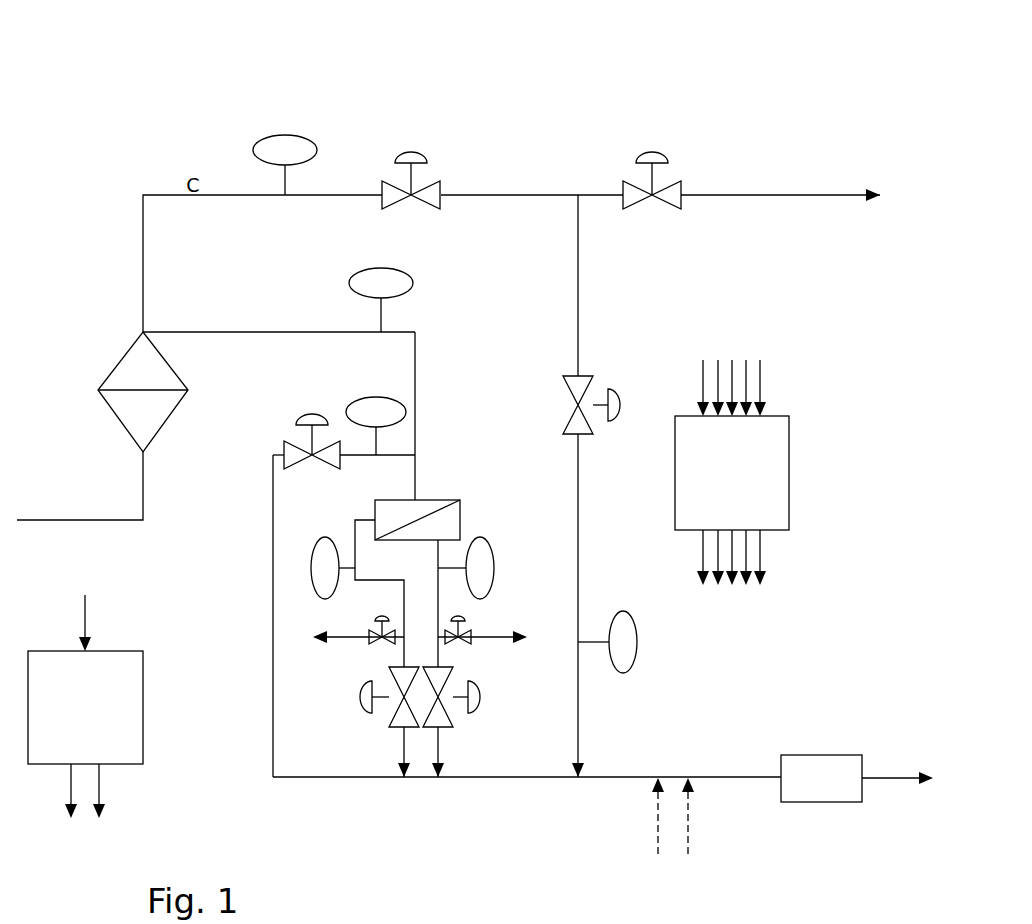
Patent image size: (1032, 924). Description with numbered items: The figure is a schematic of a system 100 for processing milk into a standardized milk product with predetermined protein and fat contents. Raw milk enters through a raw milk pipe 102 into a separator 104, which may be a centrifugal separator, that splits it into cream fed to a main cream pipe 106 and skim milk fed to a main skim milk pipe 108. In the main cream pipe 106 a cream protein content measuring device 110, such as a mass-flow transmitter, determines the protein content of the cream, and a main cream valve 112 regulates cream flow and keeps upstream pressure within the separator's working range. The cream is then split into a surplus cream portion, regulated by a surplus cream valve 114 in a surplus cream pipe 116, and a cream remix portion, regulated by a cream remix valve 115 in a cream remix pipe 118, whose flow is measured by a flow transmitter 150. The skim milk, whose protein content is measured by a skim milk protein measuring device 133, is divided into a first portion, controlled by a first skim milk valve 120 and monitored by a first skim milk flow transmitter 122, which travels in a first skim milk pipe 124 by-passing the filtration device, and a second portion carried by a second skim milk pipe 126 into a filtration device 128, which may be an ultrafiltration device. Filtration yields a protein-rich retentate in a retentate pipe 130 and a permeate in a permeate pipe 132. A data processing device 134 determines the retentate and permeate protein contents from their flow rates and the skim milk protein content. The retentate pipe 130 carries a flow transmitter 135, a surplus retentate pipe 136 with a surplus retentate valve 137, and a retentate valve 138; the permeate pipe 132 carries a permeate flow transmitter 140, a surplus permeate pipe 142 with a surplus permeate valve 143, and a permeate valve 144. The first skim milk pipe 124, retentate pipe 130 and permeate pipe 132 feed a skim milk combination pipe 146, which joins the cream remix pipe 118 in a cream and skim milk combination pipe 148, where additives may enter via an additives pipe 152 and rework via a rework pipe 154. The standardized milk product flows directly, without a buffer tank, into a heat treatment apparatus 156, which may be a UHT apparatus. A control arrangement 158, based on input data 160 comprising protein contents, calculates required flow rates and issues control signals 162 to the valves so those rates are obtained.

The system for processing milk 100 is at (162, 86).
The raw milk pipe 102 is at (100, 518).
The separator 104 is at (110, 372).
The main cream pipe 106 is at (143, 204).
The main skim milk pipe 108 is at (340, 330).
The cream protein content measuring device 110 is at (297, 135).
The main cream valve 112 is at (414, 152).
The surplus cream valve 114 is at (655, 152).
The cream remix valve 115 is at (594, 384).
The surplus cream pipe 116 is at (725, 197).
The cream remix pipe 118 is at (578, 315).
The first skim milk valve 120 is at (311, 414).
The first skim milk flow transmitter 122 is at (352, 412).
The first skim milk pipe 124 is at (273, 650).
The second skim milk pipe 126 is at (418, 464).
The filtration device 128 is at (462, 508).
The retentate pipe 130 is at (354, 522).
The permeate pipe 132 is at (440, 562).
The skim milk protein measuring device 133 is at (392, 268).
The data processing device 134 is at (85, 706).
The flow transmitter 135 is at (318, 592).
The surplus retentate pipe 136 is at (345, 640).
The surplus retentate valve 137 is at (381, 644).
The retentate valve 138 is at (372, 702).
The permeate flow transmitter 140 is at (497, 584).
The surplus permeate pipe 142 is at (500, 641).
The surplus permeate valve 143 is at (461, 644).
The permeate valve 144 is at (482, 699).
The skim milk combination pipe 146 is at (462, 778).
The cream and skim milk combination pipe 148 is at (618, 777).
The flow transmitter 150 is at (620, 612).
The additives pipe 152 is at (658, 824).
The rework pipe 154 is at (688, 824).
The heat treatment apparatus 156 is at (823, 755).
The control arrangement 158 is at (732, 473).
The input data 160 is at (760, 382).
The control signals 162 is at (760, 558).